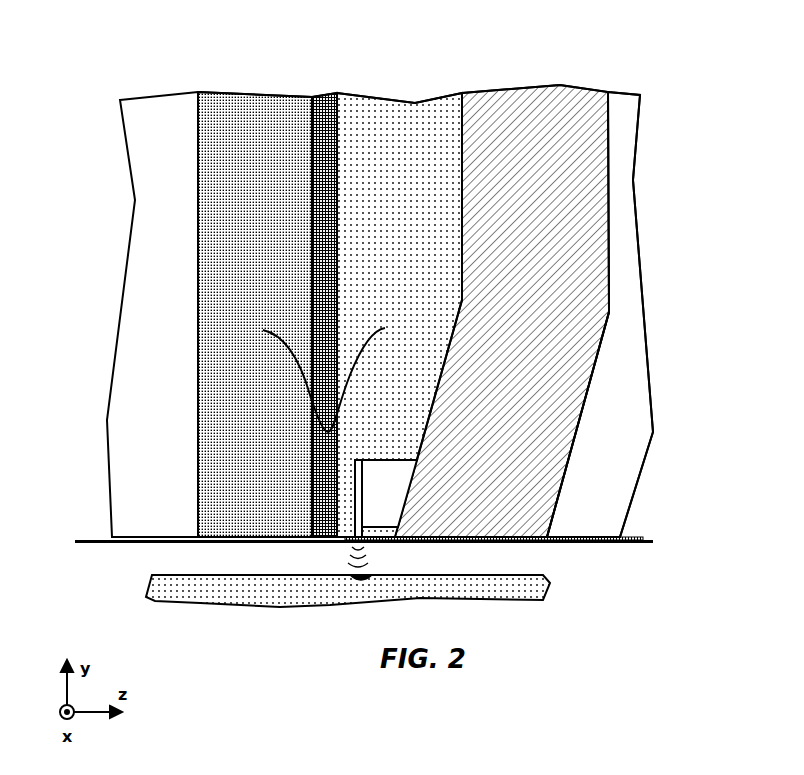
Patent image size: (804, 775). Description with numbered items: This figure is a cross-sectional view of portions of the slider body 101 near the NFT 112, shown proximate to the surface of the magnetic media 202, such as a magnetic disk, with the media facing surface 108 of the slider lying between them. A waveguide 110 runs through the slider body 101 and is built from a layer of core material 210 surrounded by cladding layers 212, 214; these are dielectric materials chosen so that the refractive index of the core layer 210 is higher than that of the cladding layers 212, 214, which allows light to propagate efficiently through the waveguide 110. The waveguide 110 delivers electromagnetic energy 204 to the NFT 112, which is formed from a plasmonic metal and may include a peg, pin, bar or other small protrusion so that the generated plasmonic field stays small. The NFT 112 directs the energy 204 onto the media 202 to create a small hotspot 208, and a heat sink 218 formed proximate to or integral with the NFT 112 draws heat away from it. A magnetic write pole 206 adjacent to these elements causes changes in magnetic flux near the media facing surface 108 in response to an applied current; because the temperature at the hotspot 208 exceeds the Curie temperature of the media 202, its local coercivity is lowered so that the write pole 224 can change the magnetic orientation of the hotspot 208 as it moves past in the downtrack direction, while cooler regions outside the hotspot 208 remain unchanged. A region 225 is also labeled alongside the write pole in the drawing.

The slider body 101 is at (160, 50).
The waveguide 110 is at (388, 63).
The cladding layer 214 is at (215, 96).
The core layer 210 is at (328, 96).
The cladding layer 212 is at (362, 105).
The magnetic write pole 206 is at (557, 88).
The housing sidewall 225 is at (614, 474).
The write pole 224 is at (543, 487).
The electromagnetic energy 204 is at (289, 347).
The heat sink 218 is at (380, 518).
The NFT 112 is at (352, 540).
The media facing surface 108 is at (577, 545).
The magnetic media 202 is at (190, 592).
The hotspot 208 is at (362, 580).